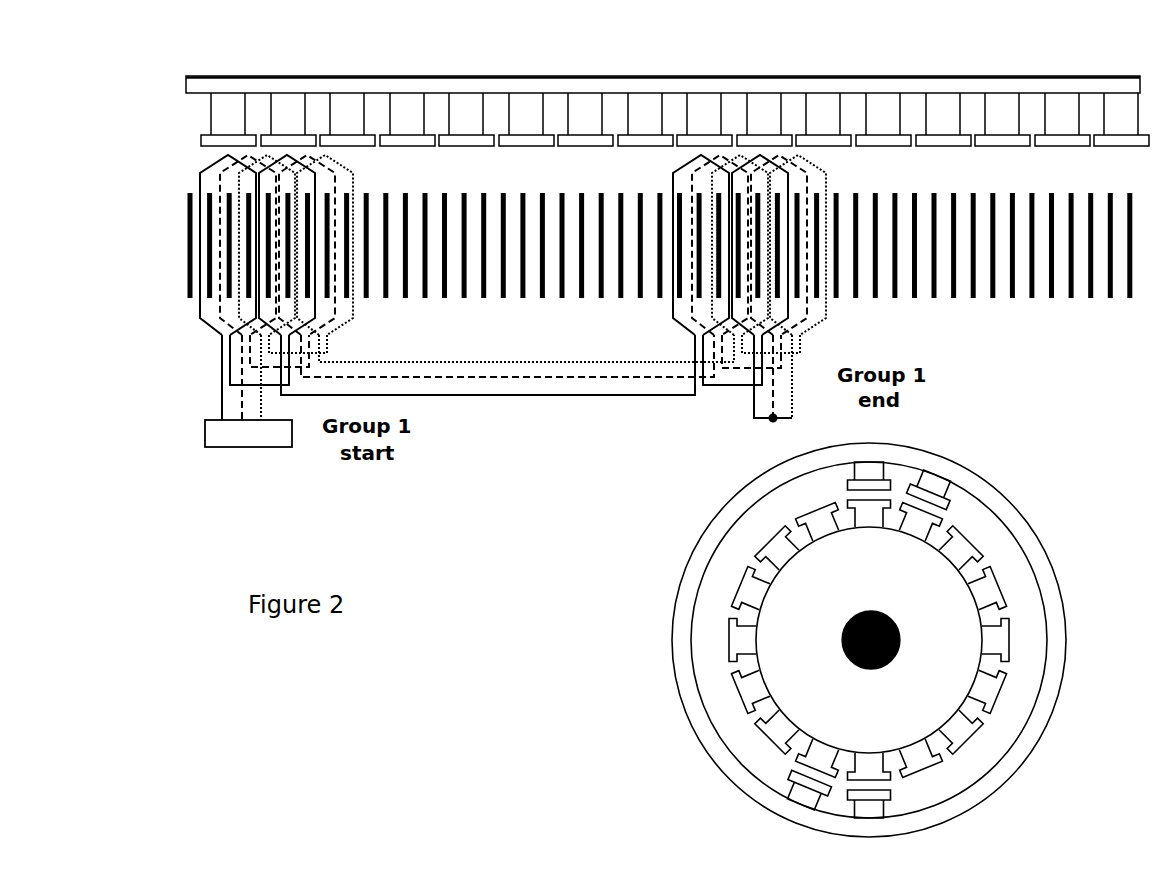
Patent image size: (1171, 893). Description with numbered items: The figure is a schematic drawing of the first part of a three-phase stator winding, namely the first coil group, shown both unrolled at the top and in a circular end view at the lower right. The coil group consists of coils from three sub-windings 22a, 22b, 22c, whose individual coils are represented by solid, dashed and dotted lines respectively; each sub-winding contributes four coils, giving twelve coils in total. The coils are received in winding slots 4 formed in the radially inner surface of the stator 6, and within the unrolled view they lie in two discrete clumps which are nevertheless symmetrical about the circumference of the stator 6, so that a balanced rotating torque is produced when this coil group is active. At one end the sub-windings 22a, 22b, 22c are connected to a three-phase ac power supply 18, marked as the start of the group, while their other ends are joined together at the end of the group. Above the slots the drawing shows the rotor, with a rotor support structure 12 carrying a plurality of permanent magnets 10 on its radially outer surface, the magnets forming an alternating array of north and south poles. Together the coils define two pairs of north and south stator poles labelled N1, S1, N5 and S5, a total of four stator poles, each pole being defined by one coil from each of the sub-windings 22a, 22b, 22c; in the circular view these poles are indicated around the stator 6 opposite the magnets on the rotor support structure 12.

The winding slots 4 is at (1060, 275).
The stator 6 is at (698, 562).
The permanent magnets 10 is at (693, 105).
The rotor support structure 12 is at (1043, 83).
The three-phase ac power supply 18 is at (248, 432).
The sub-winding 22a is at (673, 313).
The sub-winding 22b is at (800, 325).
The sub-winding 22c is at (352, 332).
The north stator pole N1 is at (860, 473).
The south stator pole S1 is at (935, 488).
The north stator pole N5 is at (880, 810).
The south stator pole S5 is at (803, 797).